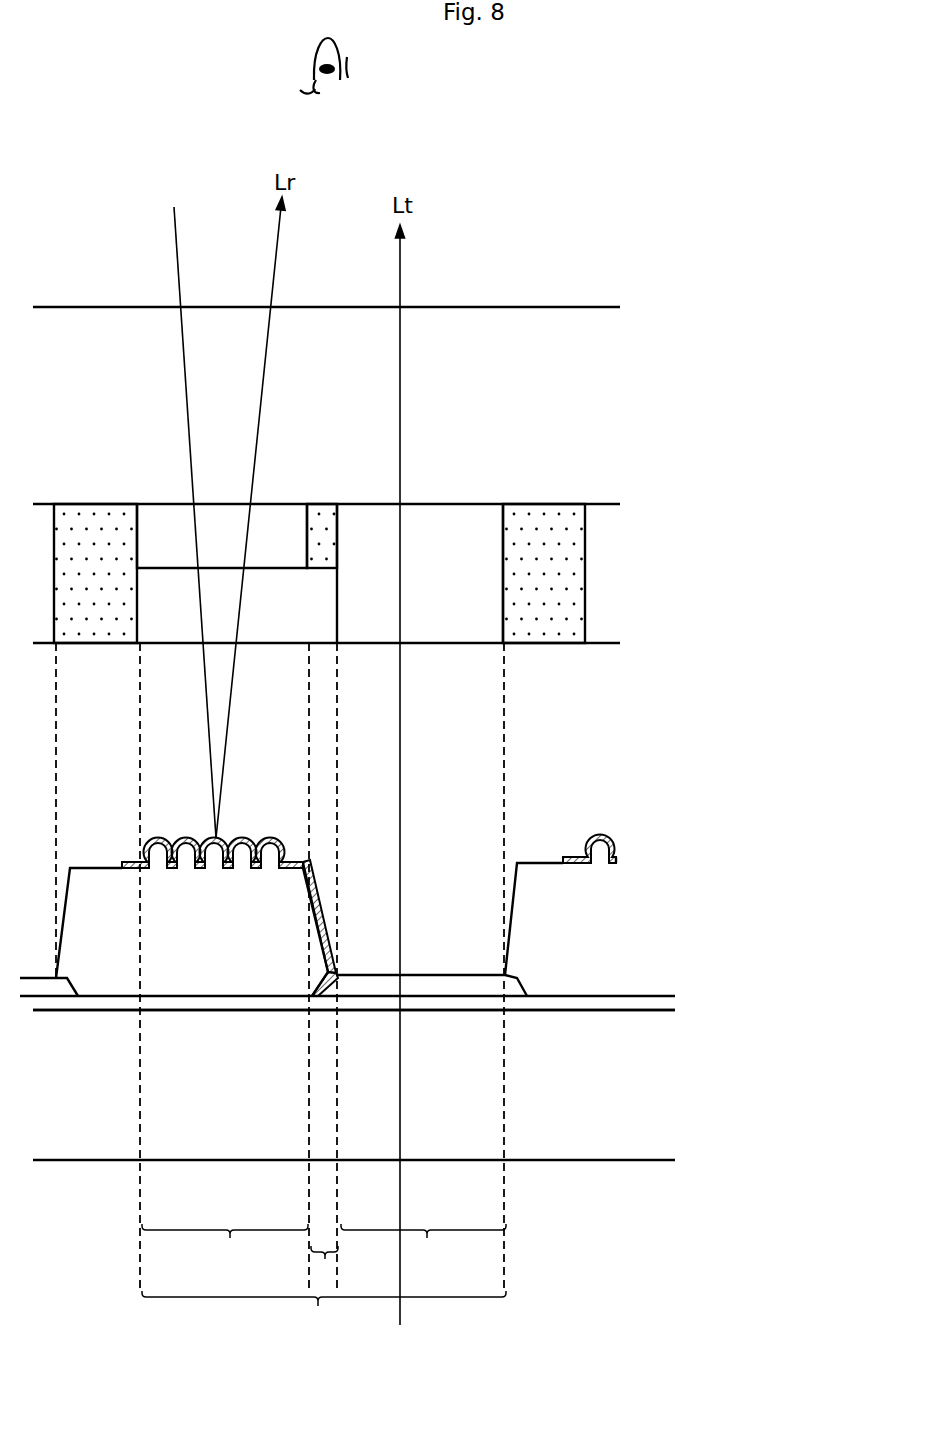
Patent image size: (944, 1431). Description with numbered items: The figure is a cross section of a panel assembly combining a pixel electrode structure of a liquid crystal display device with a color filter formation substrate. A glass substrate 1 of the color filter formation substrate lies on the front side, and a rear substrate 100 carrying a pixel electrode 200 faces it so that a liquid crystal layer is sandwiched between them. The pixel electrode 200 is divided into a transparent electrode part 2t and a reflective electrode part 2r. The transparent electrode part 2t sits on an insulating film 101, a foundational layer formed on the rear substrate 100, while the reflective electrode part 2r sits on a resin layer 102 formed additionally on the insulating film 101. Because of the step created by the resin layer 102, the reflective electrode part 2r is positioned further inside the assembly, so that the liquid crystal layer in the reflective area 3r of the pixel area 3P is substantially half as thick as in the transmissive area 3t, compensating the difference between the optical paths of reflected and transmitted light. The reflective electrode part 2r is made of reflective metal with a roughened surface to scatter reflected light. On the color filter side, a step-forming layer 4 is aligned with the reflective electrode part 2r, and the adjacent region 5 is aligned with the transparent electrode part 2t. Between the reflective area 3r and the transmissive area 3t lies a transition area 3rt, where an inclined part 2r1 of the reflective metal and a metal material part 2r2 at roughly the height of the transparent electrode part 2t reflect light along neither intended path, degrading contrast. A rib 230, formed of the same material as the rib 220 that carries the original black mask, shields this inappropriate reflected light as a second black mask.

The glass substrate 1 is at (550, 320).
The step-forming layer 4 is at (277, 520).
The rib 230 is at (320, 515).
The liquid crystal layer region above transmissive portion 5 is at (430, 515).
The rib 220 is at (532, 515).
The reflective electrode part 2r is at (242, 840).
The inclined part 2r1 is at (326, 886).
The metal material part 2r2 is at (349, 957).
The transparent electrode part 2t is at (448, 987).
The insulating film 101 is at (582, 1002).
The resin layer 102 is at (223, 973).
The pixel electrode 200 is at (545, 1028).
The rear substrate 100 is at (600, 1142).
The reflective area 3r is at (225, 1249).
The transition area 3rt is at (328, 1270).
The transmissive area 3t is at (423, 1249).
The pixel area 3P is at (324, 1312).